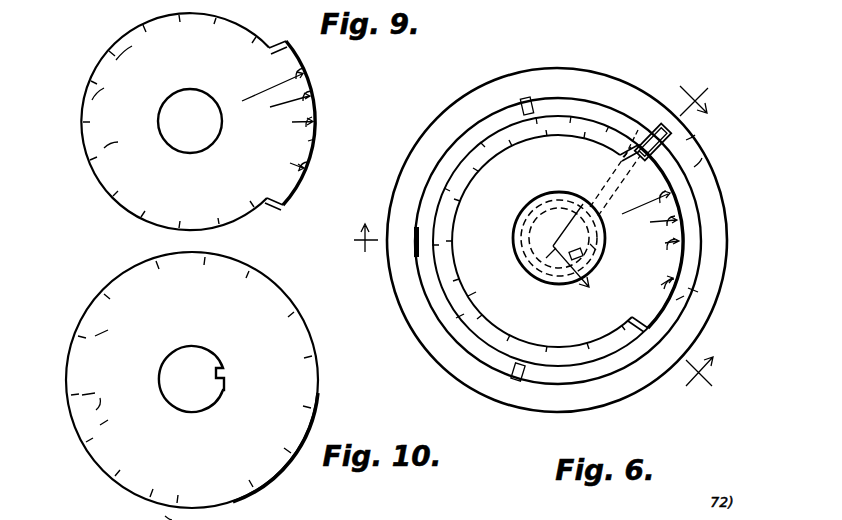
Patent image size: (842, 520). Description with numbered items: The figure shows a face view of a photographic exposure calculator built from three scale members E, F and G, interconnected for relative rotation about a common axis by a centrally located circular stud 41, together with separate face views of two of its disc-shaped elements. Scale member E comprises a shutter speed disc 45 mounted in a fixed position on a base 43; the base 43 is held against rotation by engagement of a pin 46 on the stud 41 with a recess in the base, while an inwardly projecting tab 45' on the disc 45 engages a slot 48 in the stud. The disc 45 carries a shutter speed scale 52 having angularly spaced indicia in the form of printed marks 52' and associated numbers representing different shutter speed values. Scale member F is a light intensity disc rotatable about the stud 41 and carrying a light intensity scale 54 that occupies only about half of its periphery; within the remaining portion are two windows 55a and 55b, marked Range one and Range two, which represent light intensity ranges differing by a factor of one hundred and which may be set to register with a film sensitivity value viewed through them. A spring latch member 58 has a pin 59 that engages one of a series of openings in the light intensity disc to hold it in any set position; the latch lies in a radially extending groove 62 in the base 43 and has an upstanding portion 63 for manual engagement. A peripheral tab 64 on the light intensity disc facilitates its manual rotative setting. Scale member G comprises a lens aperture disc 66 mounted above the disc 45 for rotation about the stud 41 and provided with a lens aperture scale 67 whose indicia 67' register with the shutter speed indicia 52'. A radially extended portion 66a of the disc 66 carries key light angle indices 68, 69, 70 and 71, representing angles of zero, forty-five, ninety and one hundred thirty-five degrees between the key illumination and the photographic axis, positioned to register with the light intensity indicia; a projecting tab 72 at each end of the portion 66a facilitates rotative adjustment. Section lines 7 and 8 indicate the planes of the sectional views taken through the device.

In FIG. 6, the circular stud 41 is at (547, 281).
In FIG. 6, the base 43 is at (462, 370).
In FIG. 10, the shutter speed disc 45 is at (174, 380).
In FIG. 6, the shutter speed disc 45 is at (350, 192).
In FIG. 10, the inwardly projecting tab 45' is at (210, 370).
In FIG. 6, the pin 46 is at (585, 254).
In FIG. 6, the slot 48 is at (598, 254).
In FIG. 10, the shutter speed scale 52 is at (65, 431).
In FIG. 6, the shutter speed scale 52 is at (482, 239).
In FIG. 10, the shutter speed indicia 52' is at (112, 377).
In FIG. 6, the light intensity scale 54 is at (694, 167).
In FIG. 6, the Range 1 opening 55a is at (522, 386).
In FIG. 10, the Range 2 opening 55b is at (165, 516).
In FIG. 6, the Range 2 opening 55b is at (529, 97).
In FIG. 6, the spring latch member 58 is at (604, 186).
In FIG. 6, the pin 59 is at (639, 129).
In FIG. 6, the radially extending groove 62 is at (686, 140).
In FIG. 6, the upstanding portion 63 is at (655, 122).
In FIG. 6, the peripheral tab 64 is at (414, 252).
In FIG. 9, the lens aperture disc 66 is at (126, 170).
In FIG. 6, the lens aperture disc 66 is at (562, 241).
In FIG. 9, the radially extended portion 66a is at (315, 140).
In FIG. 6, the radially extended portion 66a is at (678, 300).
In FIG. 9, the lens aperture scale 67 is at (93, 59).
In FIG. 9, the lens aperture indicia 67' is at (69, 101).
In FIG. 9, the key light angle index (0°) 68 is at (305, 70).
In FIG. 6, the key light angle index (0°) 68 is at (660, 203).
In FIG. 9, the key light angle index (45°) 69 is at (311, 93).
In FIG. 6, the key light angle index (45°) 69 is at (684, 216).
In FIG. 9, the key light angle index (90°) 70 is at (315, 119).
In FIG. 6, the key light angle index (90°) 70 is at (690, 238).
In FIG. 9, the key light angle index (135°) 71 is at (308, 166).
In FIG. 6, the key light angle index (135°) 71 is at (688, 272).
In FIG. 9, the projecting tab 72 is at (284, 212).
In FIG. 6, the projecting tab 72 is at (644, 334).
In FIG. 6, the section line 7 is at (533, 318).
In FIG. 6, the section line 8 is at (634, 199).
In FIG. 9, the scale member G is at (104, 148).
In FIG. 6, the scale member G is at (470, 295).
In FIG. 6, the scale member E is at (458, 317).
In FIG. 6, the scale member F is at (698, 292).